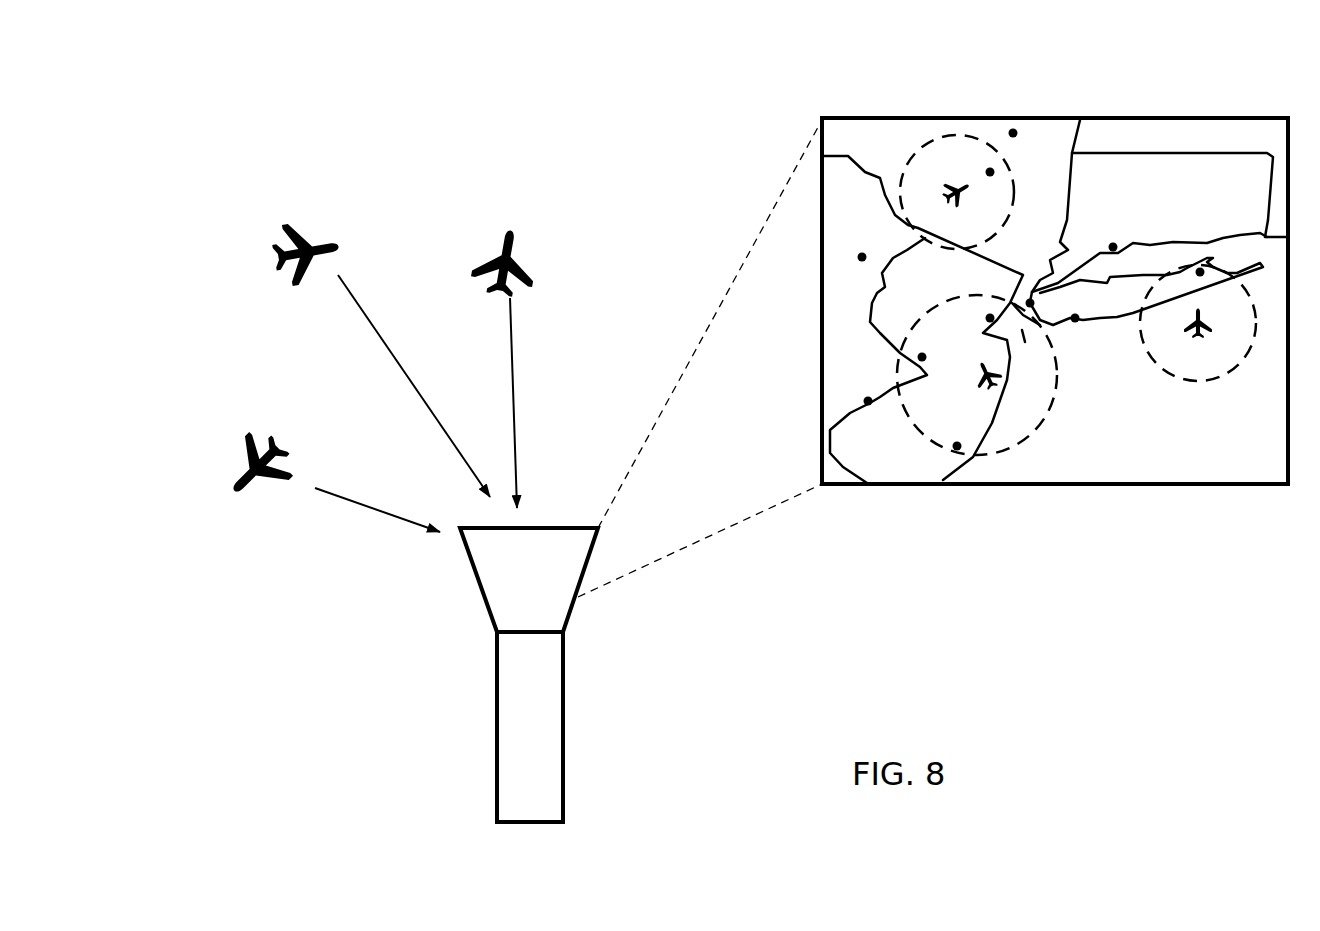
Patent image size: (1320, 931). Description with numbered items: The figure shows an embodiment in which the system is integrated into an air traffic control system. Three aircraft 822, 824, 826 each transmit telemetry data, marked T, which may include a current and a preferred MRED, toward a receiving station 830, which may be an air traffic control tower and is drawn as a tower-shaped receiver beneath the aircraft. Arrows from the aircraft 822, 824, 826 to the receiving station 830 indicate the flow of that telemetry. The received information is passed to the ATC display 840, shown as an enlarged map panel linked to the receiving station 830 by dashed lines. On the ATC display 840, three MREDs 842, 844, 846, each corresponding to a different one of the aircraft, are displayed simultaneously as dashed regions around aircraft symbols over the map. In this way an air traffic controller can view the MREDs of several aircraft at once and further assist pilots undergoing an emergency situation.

The aircraft 822 is at (492, 250).
The aircraft 824 is at (283, 226).
The aircraft 826 is at (243, 437).
The receiving station 830 is at (497, 718).
The ATC display 840 is at (860, 118).
The MRED 842 is at (1042, 423).
The MRED 844 is at (1198, 378).
The MRED 846 is at (1008, 228).